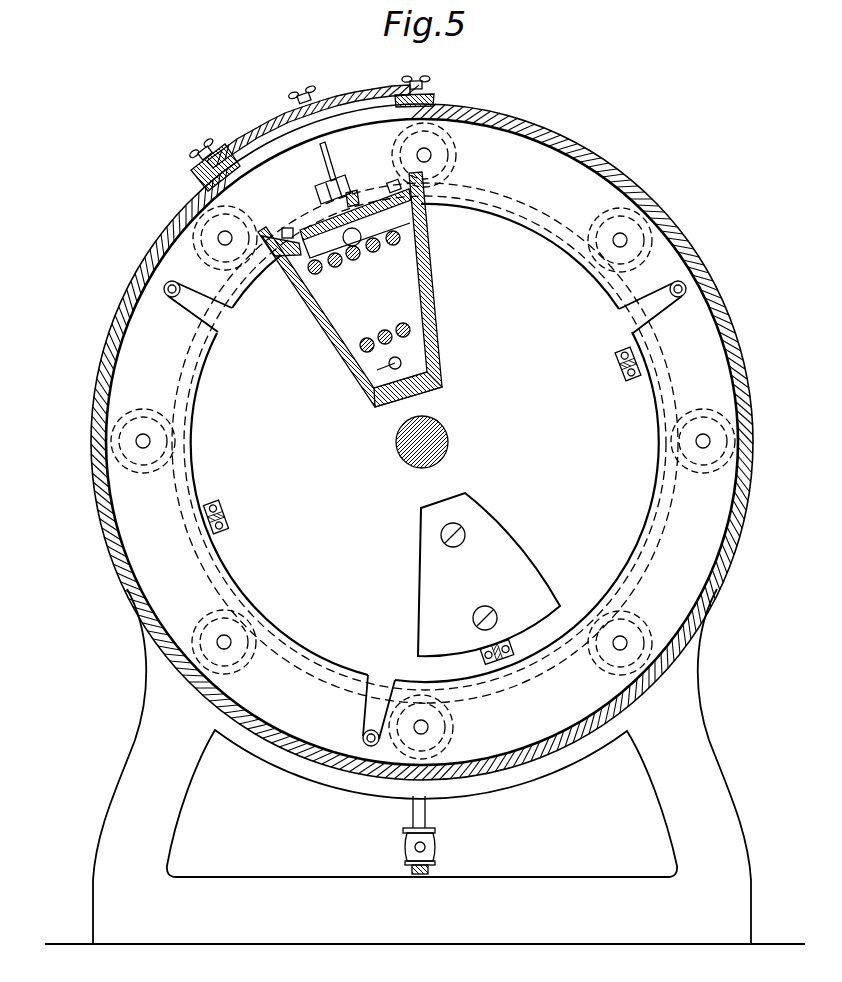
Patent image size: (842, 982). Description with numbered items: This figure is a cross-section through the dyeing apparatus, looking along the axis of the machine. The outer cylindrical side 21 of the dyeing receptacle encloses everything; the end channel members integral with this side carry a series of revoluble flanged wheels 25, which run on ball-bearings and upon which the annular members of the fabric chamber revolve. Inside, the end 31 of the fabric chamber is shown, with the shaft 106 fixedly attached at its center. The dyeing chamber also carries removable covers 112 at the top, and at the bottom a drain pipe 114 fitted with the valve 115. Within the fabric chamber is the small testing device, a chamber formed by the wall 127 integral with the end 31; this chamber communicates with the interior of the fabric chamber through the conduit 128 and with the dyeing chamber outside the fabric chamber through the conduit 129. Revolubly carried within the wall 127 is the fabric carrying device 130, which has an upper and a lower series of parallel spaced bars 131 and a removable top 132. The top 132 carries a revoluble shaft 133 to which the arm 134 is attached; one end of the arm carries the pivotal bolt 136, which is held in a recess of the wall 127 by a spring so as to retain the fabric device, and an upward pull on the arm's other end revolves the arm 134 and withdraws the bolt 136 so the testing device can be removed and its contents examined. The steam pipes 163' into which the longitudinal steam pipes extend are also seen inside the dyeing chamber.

The cylindrical side 21 is at (690, 240).
The revoluble flanged wheels 25 is at (192, 212).
The end 31 is at (640, 498).
The shaft 106 is at (449, 437).
The removable covers 112 is at (347, 103).
The drain pipe 114 is at (412, 808).
The valve 115 is at (406, 848).
The wall 127 is at (374, 270).
The conduit 128 is at (363, 378).
The conduit 129 is at (351, 246).
The fabric carrying device 130 is at (332, 328).
The parallel spaced bars 131 is at (403, 325).
The removable top 132 is at (377, 203).
The revoluble shaft 133 is at (316, 198).
The arm 134 is at (333, 160).
The pivotal bolt 136 is at (352, 192).
The pipes 163' is at (421, 513).